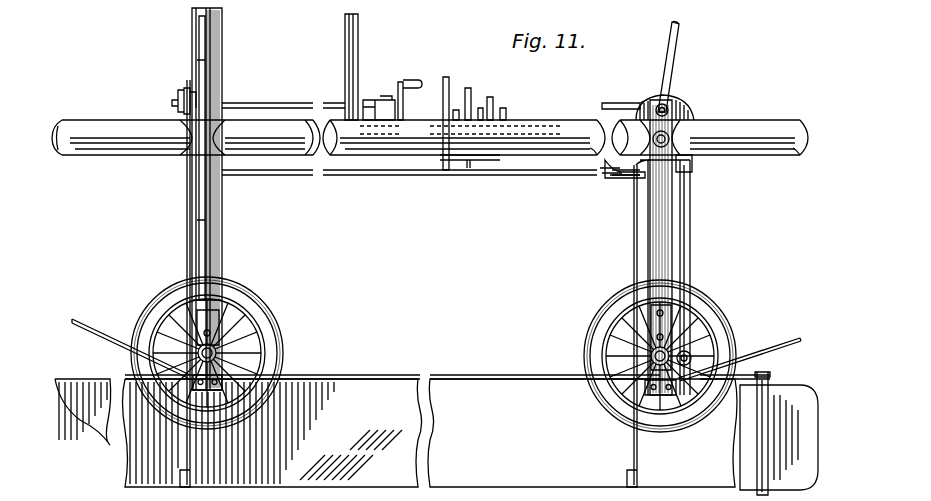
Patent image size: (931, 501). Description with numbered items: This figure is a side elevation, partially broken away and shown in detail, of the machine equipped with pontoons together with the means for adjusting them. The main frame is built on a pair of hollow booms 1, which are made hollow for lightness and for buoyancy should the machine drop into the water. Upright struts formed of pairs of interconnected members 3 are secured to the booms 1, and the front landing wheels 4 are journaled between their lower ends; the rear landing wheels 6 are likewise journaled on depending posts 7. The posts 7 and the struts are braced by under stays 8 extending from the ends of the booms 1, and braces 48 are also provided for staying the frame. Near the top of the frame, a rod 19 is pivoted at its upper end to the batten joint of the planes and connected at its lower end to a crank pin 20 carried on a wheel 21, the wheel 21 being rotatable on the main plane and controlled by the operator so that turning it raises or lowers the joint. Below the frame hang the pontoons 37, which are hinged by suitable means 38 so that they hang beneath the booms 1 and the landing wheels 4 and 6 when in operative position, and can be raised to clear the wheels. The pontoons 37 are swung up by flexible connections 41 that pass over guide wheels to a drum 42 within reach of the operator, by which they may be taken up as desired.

The booms 1 is at (530, 124).
The members 3 is at (214, 212).
The landing wheels 4 is at (280, 330).
The rear landing wheels 6 is at (716, 320).
The depending posts 7 is at (668, 226).
The under stays 8 is at (90, 325).
The rod 19 is at (680, 72).
The crank pin 20 is at (660, 102).
The wheel 21 is at (690, 108).
The pontoons 37 is at (436, 433).
The hinge means 38 is at (240, 370).
The flexible connections 41 is at (188, 250).
The drum 42 is at (182, 98).
The braces 48 is at (212, 246).